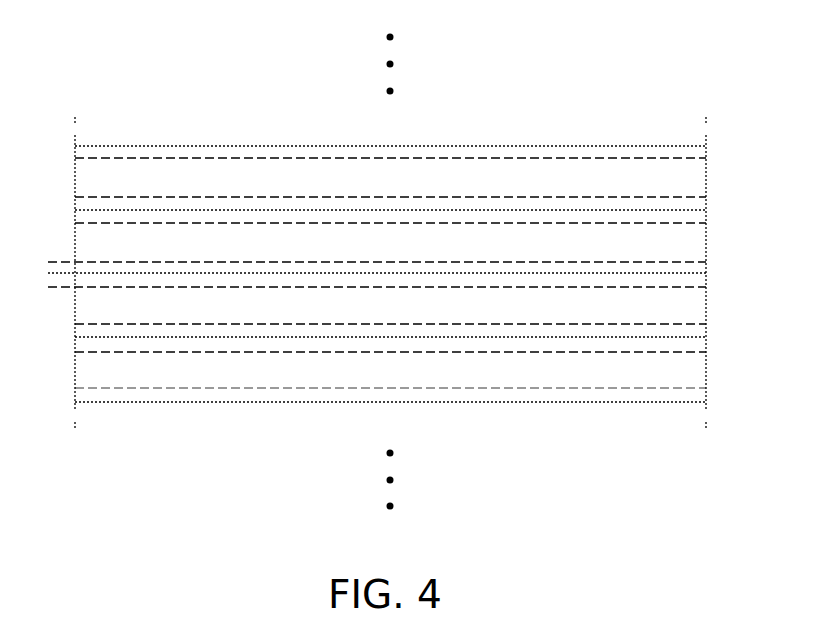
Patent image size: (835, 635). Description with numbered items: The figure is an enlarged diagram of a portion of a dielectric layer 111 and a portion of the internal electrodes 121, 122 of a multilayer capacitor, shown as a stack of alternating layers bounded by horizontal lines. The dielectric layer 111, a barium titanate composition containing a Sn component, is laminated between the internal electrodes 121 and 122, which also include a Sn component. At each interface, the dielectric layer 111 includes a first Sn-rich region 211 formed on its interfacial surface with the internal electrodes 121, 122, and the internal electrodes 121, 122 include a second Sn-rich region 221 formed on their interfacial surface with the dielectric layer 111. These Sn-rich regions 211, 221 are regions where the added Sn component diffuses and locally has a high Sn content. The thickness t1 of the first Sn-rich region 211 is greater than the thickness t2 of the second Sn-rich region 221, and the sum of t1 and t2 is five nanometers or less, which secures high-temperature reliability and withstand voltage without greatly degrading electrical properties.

The first Sn-rich region 211 is at (699, 152).
The second Sn-rich region 221 is at (699, 219).
The dielectric layer 111 is at (699, 177).
The internal electrode 121 is at (699, 241).
The internal electrode 122 is at (699, 366).
The thickness of the first Sn-rich region t1 is at (47, 273).
The thickness of the second Sn-rich region t2 is at (49, 270).